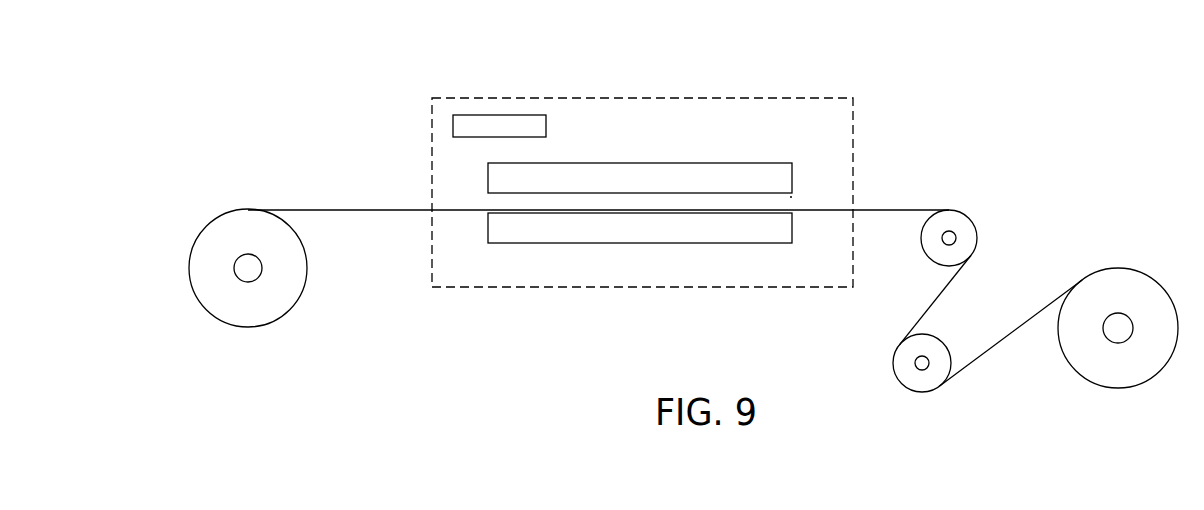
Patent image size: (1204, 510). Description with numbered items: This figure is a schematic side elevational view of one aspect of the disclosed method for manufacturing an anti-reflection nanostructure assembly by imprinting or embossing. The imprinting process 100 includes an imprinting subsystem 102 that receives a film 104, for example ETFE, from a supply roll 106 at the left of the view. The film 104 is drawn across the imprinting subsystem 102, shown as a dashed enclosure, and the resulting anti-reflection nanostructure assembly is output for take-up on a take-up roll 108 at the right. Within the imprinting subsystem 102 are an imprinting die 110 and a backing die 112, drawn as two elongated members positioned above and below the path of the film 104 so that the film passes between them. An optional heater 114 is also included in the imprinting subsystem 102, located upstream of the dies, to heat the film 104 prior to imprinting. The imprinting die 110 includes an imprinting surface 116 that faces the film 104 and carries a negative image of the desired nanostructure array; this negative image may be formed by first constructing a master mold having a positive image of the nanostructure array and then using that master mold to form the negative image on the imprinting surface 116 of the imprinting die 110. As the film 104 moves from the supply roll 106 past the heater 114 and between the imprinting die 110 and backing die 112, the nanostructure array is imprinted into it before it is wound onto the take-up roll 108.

The imprinting process 100 is at (957, 115).
The imprinting subsystem 102 is at (656, 98).
The film 104 is at (335, 210).
The supply roll 106 is at (248, 327).
The take-up roll 108 is at (1142, 270).
The imprinting die 110 is at (741, 163).
The backing die 112 is at (705, 243).
The heater 114 is at (493, 115).
The imprinting surface 116 is at (785, 193).